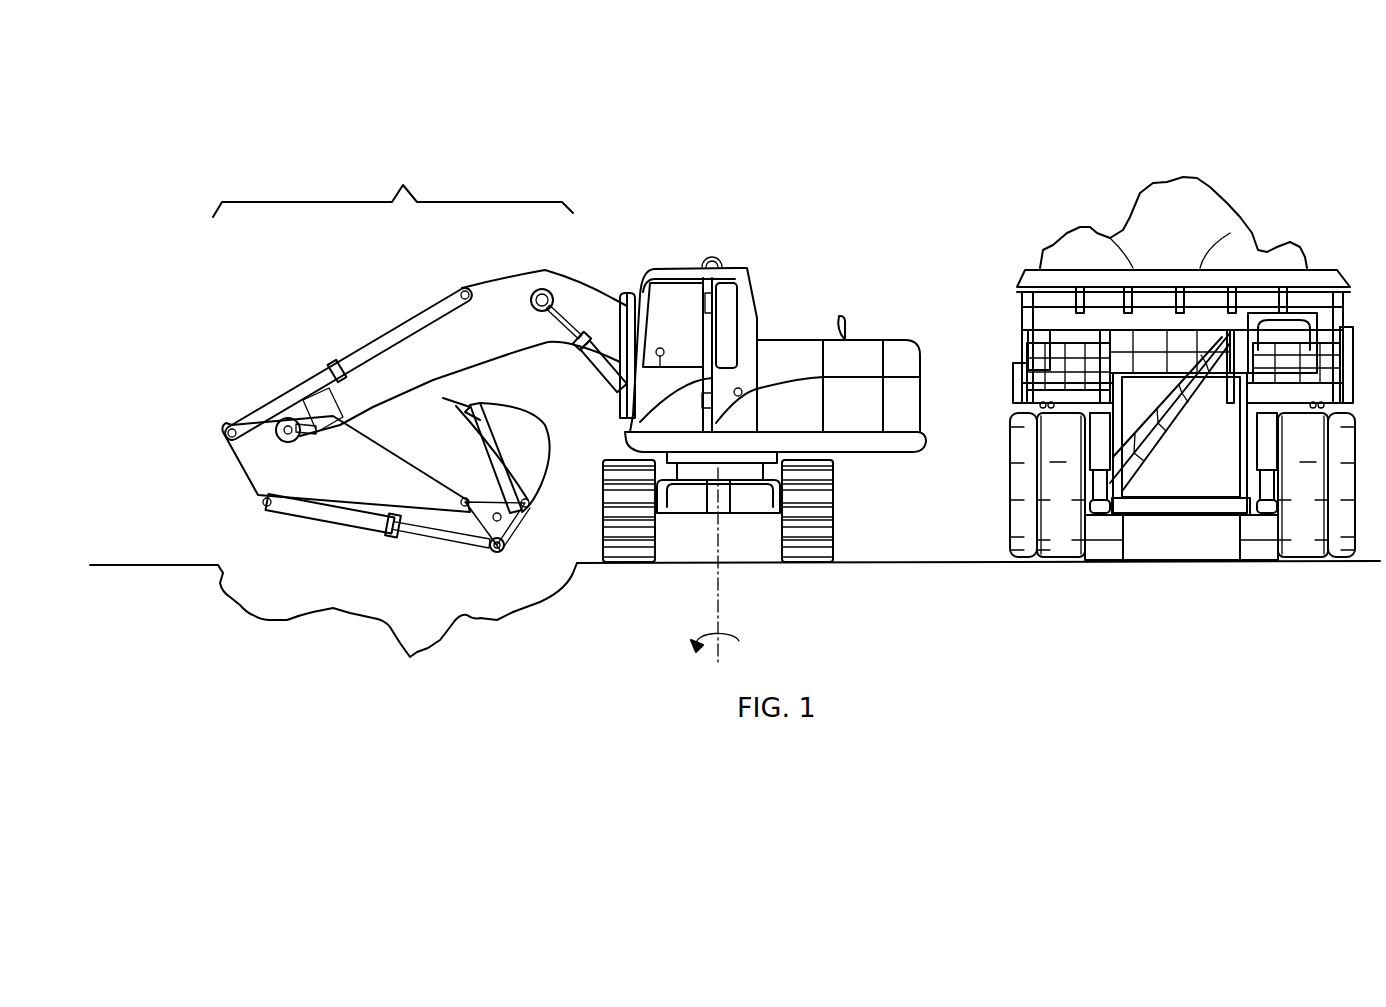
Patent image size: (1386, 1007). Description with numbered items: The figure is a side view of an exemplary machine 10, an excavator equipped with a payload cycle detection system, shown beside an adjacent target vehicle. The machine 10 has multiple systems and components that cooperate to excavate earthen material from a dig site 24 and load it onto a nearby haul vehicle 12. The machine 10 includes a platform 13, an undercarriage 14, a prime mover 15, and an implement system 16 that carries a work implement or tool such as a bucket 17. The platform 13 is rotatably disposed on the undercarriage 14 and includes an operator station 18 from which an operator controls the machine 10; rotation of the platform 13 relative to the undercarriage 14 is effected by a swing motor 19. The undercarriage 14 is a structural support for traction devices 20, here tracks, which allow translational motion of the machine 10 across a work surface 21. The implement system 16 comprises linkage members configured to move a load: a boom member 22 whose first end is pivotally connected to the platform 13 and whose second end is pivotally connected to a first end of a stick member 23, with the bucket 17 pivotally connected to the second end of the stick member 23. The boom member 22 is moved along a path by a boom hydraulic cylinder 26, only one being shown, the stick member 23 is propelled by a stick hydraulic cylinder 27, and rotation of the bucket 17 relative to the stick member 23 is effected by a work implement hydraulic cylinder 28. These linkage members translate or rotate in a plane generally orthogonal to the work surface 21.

The machine 10 is at (828, 218).
The haul vehicle 12 is at (1238, 162).
The platform 13 is at (910, 443).
The undercarriage 14 is at (749, 561).
The prime mover 15 is at (877, 371).
The implement system 16 is at (403, 185).
The bucket 17 is at (528, 457).
The operator station 18 is at (670, 267).
The swing motor 19 is at (775, 473).
The traction devices 20 is at (820, 518).
The work surface 21 is at (890, 561).
The boom member 22 is at (522, 336).
The stick member 23 is at (357, 476).
The dig site 24 is at (333, 610).
The boom hydraulic cylinder 26 is at (600, 367).
The stick hydraulic cylinder 27 is at (383, 340).
The work implement hydraulic cylinder 28 is at (342, 517).